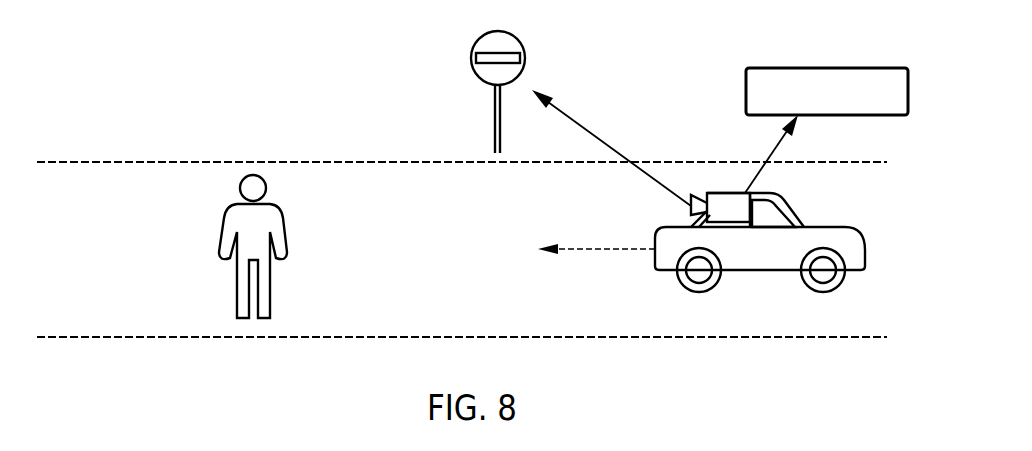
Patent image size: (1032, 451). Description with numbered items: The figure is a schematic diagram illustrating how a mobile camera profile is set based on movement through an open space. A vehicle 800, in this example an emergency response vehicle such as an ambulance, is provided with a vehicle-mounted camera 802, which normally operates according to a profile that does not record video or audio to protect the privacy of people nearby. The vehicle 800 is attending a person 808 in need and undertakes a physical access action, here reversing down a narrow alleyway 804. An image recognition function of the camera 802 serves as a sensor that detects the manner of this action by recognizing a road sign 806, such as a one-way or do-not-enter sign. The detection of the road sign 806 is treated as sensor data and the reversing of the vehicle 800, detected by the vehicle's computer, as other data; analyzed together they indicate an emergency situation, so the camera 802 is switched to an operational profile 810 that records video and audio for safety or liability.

The vehicle 800 is at (758, 271).
The vehicle-mounted camera 802 is at (718, 192).
The narrow alleyway 804 is at (607, 313).
The road sign 806 is at (471, 60).
The person 808 is at (222, 238).
The operational profile 810 is at (825, 67).